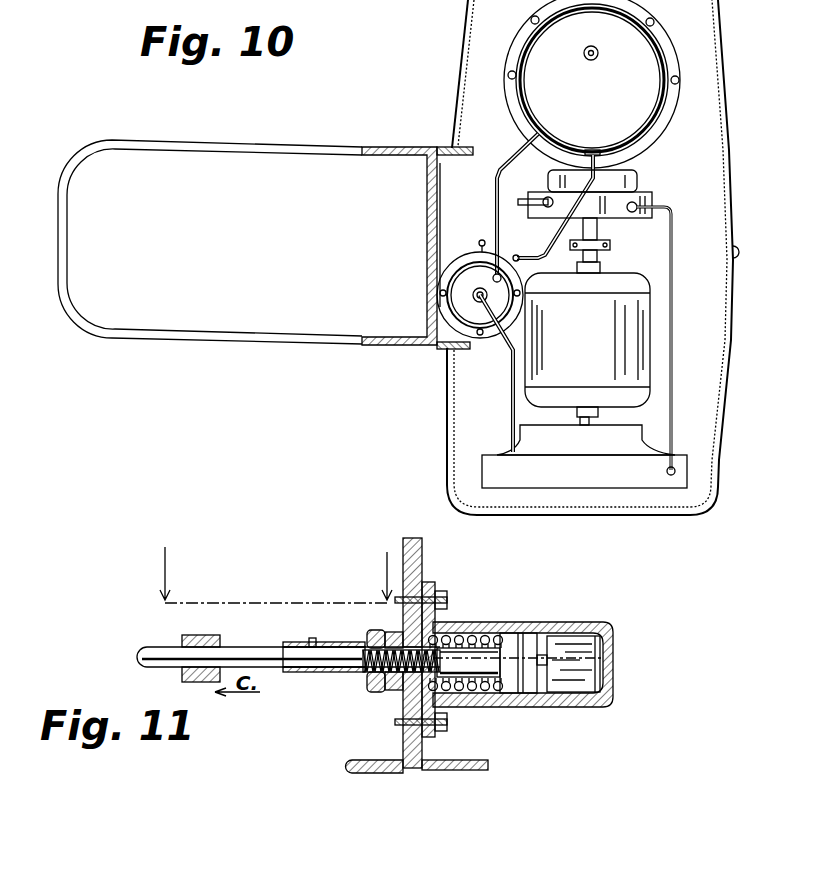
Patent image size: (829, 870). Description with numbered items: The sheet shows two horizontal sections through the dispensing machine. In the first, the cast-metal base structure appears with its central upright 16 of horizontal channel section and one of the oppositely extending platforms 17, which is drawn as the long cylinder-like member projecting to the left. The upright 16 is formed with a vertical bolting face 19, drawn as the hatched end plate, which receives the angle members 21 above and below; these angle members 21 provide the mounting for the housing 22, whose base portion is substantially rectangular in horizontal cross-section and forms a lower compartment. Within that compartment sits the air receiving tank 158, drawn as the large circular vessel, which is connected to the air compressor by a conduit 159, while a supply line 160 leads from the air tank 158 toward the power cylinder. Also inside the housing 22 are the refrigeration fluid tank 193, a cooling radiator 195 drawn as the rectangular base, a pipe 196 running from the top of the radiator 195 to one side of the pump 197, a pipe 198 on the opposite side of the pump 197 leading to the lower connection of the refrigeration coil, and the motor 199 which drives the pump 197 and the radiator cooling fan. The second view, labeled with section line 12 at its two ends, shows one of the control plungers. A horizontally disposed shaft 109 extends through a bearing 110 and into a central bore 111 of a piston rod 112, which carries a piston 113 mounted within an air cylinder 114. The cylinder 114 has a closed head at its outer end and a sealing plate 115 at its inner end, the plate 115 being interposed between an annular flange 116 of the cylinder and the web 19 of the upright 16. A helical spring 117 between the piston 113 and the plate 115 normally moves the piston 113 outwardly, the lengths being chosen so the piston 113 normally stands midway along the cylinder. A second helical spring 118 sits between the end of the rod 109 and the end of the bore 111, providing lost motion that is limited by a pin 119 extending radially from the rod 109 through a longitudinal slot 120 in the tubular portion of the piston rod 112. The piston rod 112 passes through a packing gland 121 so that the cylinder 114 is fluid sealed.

In FIG. 11, the section line 12- 12 is at (275, 556).
In FIG. 11, the central upright 16 is at (410, 553).
In FIG. 10, the platform 17 is at (376, 323).
In FIG. 10, the vertical bolting face 19 is at (440, 226).
In FIG. 10, the angle members 21 is at (465, 152).
In FIG. 10, the housing 22 is at (717, 410).
In FIG. 11, the shaft 109 is at (246, 657).
In FIG. 11, the bearing 110 is at (196, 635).
In FIG. 11, the central bore 111 is at (343, 675).
In FIG. 11, the piston rod 112 is at (527, 648).
In FIG. 11, the piston 113 is at (548, 632).
In FIG. 11, the air cylinder 114 is at (584, 628).
In FIG. 11, the sealing plate 115 is at (422, 740).
In FIG. 11, the annular flange 116 is at (436, 586).
In FIG. 11, the helical spring 117 is at (483, 660).
In FIG. 11, the helical spring 118 is at (364, 645).
In FIG. 11, the pin 119 is at (312, 656).
In FIG. 11, the longitudinal slot 120 is at (333, 643).
In FIG. 11, the packing gland 121 is at (390, 684).
In FIG. 10, the air receiving tank 158 is at (570, 121).
In FIG. 10, the conduit 159 is at (593, 60).
In FIG. 10, the supply line 160 is at (543, 208).
In FIG. 10, the refrigeration fluid tank 193 is at (460, 282).
In FIG. 10, the cooling radiator 195 is at (562, 483).
In FIG. 10, the pipe 196 is at (673, 386).
In FIG. 10, the pump 197 is at (613, 202).
In FIG. 10, the pipe 198 is at (518, 200).
In FIG. 10, the motor 199 is at (587, 349).